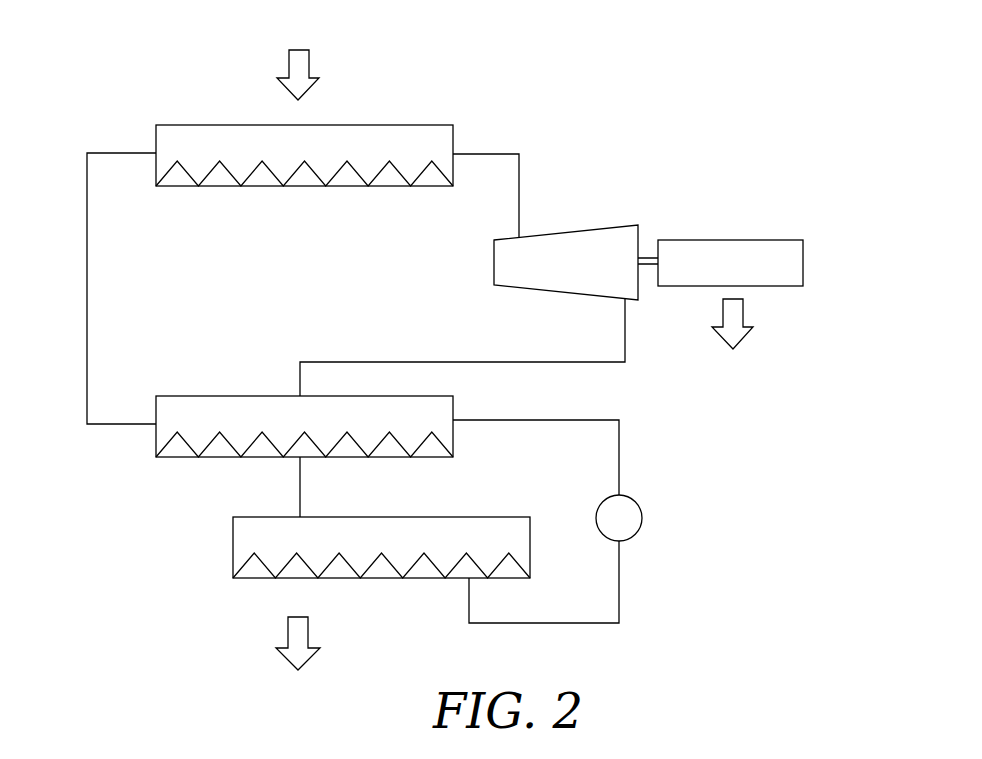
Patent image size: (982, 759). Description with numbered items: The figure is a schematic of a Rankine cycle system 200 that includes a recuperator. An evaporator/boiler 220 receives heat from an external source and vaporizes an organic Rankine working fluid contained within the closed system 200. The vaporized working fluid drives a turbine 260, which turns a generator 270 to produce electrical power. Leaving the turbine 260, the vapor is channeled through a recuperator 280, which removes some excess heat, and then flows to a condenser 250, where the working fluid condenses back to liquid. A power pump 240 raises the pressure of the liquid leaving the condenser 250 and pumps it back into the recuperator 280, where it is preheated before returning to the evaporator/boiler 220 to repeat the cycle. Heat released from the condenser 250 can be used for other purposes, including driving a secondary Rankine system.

The Rankine cycle system 200 is at (558, 65).
The evaporator/boiler 220 is at (195, 125).
The power pump 240 is at (629, 515).
The condenser 250 is at (252, 538).
The turbine 260 is at (582, 247).
The generator 270 is at (733, 253).
The recuperator 280 is at (210, 405).